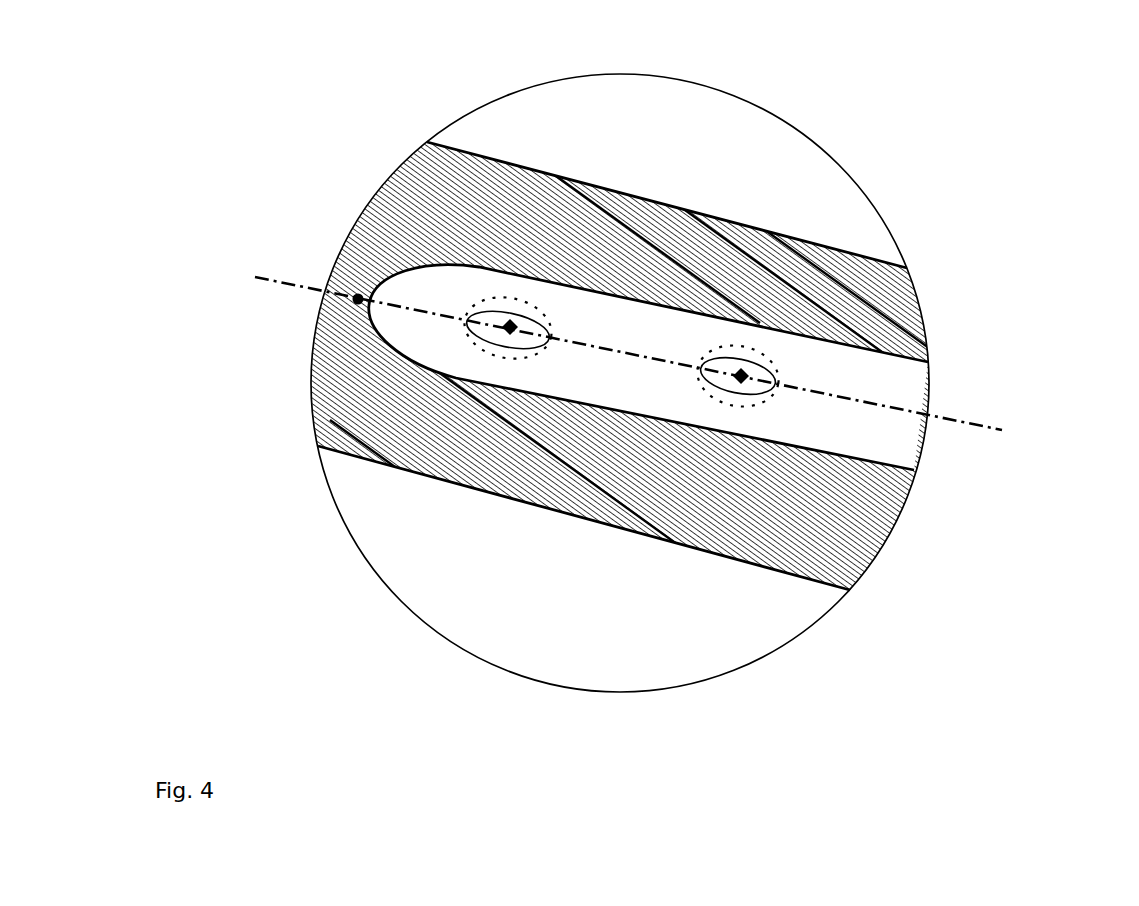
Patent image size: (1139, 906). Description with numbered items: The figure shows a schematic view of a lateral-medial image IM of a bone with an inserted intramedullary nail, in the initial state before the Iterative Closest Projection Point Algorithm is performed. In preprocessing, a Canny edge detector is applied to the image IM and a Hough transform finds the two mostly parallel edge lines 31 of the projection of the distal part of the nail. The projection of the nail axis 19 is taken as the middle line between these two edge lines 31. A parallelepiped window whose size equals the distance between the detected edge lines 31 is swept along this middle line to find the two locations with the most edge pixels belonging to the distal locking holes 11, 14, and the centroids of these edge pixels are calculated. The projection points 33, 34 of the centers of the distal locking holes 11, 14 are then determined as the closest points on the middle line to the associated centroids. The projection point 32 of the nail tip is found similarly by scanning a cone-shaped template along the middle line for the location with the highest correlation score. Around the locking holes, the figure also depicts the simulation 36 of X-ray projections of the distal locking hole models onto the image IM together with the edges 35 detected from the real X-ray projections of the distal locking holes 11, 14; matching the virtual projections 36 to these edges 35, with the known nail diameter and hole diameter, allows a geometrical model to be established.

The distal locking hole 11 is at (730, 363).
The distal locking hole 14 is at (528, 325).
The nail axis 19 is at (995, 422).
The edge lines 31 is at (895, 360).
The projection point of the nail tip 32 is at (347, 303).
The projection point of the center of a distal locking hole 33 is at (510, 319).
The projection point of the center of a distal locking hole 34 is at (746, 364).
The edges detected from the real X-ray projections of the distal locking holes 35 is at (524, 352).
The simulation of X-ray projections of the distal locking hole models 36 is at (710, 403).
The image IM is at (858, 175).